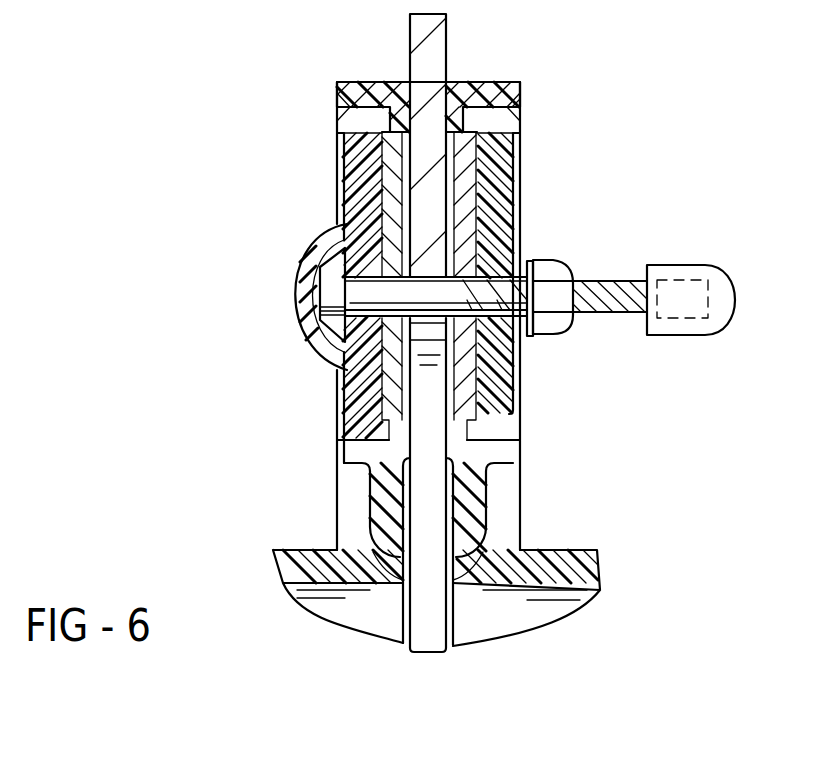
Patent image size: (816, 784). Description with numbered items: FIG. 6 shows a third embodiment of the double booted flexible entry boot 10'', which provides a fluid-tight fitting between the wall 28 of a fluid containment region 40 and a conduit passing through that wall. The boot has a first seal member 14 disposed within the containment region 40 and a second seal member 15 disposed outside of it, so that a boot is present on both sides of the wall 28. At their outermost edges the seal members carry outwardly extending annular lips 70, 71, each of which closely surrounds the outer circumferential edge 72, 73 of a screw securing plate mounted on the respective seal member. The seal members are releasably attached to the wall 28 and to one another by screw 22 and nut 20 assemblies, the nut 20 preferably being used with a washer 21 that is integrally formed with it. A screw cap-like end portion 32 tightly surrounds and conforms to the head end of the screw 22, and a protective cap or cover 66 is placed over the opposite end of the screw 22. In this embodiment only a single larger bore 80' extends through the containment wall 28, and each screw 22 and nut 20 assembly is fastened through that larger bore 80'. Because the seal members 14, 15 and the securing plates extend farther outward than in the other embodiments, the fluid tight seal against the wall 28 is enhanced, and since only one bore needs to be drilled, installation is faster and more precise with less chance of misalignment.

The flexible entry boot 10'' is at (684, 63).
The first seal member 14 is at (522, 452).
The second seal member 15 is at (340, 447).
The nut 20 is at (537, 340).
The washer 21 is at (533, 340).
The screw 22 is at (596, 276).
The wall 28 is at (446, 50).
The screw cap-like end portion 32 is at (295, 290).
The fluid containment region 40 is at (693, 453).
The protective cap or cover 66 is at (710, 266).
The outwardly extending annular lip 70 is at (493, 82).
The outwardly extending annular lip 71 is at (363, 82).
The outer circumferential edge 72 is at (520, 121).
The outer circumferential edge 73 is at (337, 121).
The larger bore 80' is at (520, 245).